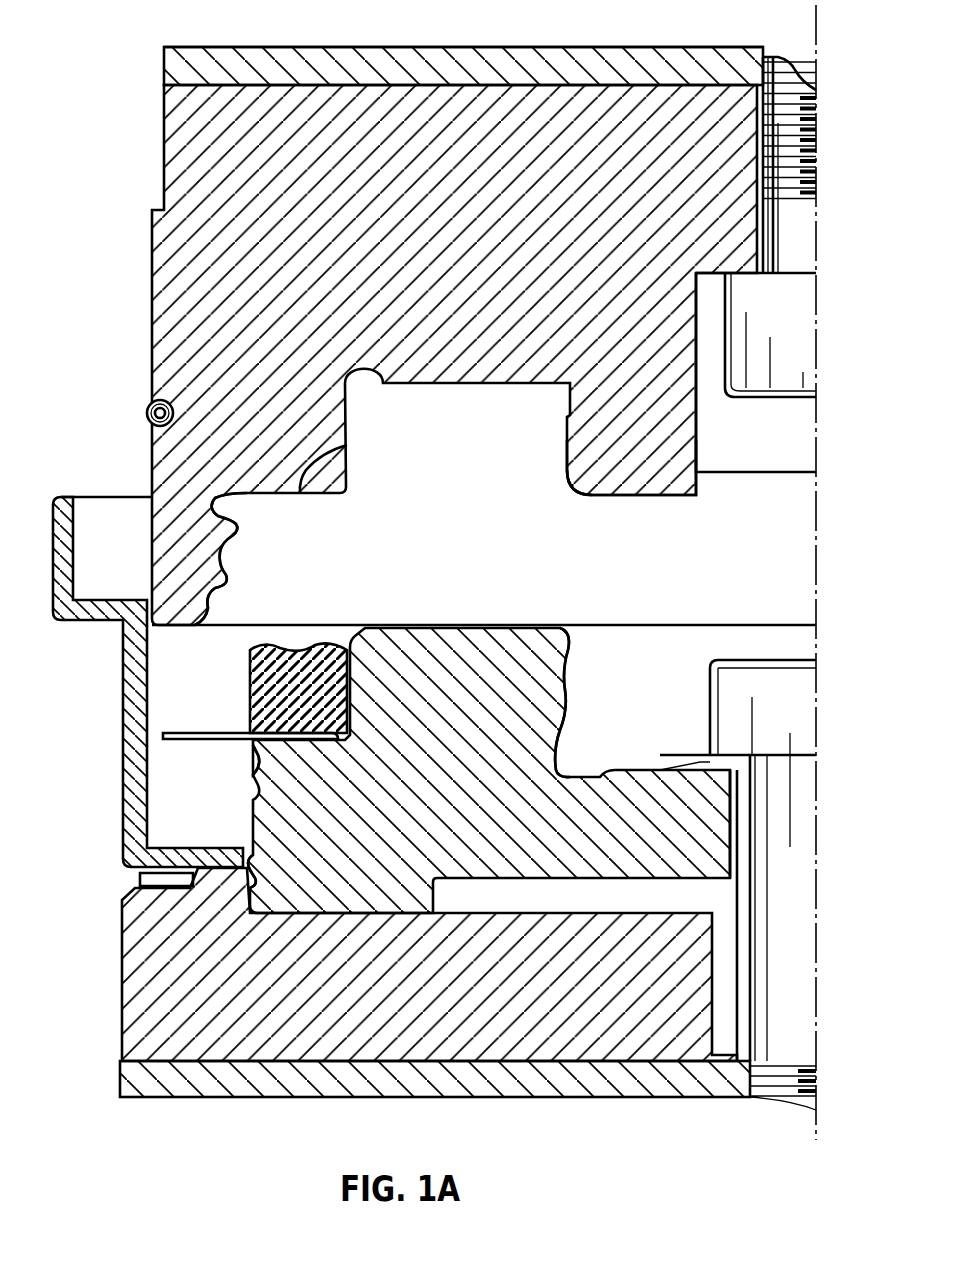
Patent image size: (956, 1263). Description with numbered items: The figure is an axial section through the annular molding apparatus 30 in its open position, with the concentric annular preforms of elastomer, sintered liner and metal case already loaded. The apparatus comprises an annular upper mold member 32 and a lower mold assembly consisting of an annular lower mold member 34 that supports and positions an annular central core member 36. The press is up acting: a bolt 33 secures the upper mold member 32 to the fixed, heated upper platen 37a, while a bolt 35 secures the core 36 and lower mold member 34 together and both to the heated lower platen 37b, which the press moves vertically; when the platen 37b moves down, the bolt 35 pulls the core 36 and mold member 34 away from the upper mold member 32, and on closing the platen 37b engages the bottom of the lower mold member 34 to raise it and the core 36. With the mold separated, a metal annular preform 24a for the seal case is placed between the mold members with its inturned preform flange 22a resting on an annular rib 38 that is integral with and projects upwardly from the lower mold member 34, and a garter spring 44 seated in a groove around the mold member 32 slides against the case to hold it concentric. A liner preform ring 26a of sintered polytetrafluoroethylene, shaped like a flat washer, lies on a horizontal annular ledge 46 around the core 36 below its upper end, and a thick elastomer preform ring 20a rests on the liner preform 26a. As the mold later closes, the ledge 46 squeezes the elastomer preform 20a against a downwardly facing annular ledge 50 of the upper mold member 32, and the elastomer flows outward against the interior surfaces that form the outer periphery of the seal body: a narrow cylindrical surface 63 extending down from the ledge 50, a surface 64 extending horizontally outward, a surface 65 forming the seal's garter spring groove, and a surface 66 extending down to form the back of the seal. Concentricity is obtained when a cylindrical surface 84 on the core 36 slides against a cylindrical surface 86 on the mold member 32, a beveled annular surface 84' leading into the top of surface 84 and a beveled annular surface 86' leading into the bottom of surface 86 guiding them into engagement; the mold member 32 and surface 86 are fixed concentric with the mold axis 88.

The molding apparatus 30 is at (515, 42).
The upper platen 37a is at (162, 62).
The upper mold member 32 is at (152, 255).
The garter spring 44 is at (148, 405).
The ledge 50 is at (346, 452).
The cylindrical surface 86 is at (587, 464).
The beveled annular surface 86' is at (552, 505).
The mold axis 88 is at (818, 556).
The cylindrical surface 63 is at (252, 500).
The surface 64 is at (255, 505).
The surface 65 is at (245, 530).
The surface 66 is at (215, 590).
The bolt 33 is at (790, 238).
The metal annular preform 24a is at (123, 676).
The elastomer preform ring 20a is at (255, 662).
The liner preform ring 26a is at (168, 733).
The ledge 46 is at (258, 748).
The central core member 36 is at (320, 818).
The beveled annular surface 84' is at (600, 614).
The cylindrical surface 84 is at (594, 706).
The preform flange 22a is at (162, 845).
The annular rib 38 is at (140, 874).
The lower mold member 34 is at (122, 970).
The lower platen 37b is at (120, 1083).
The bolt 35 is at (790, 905).